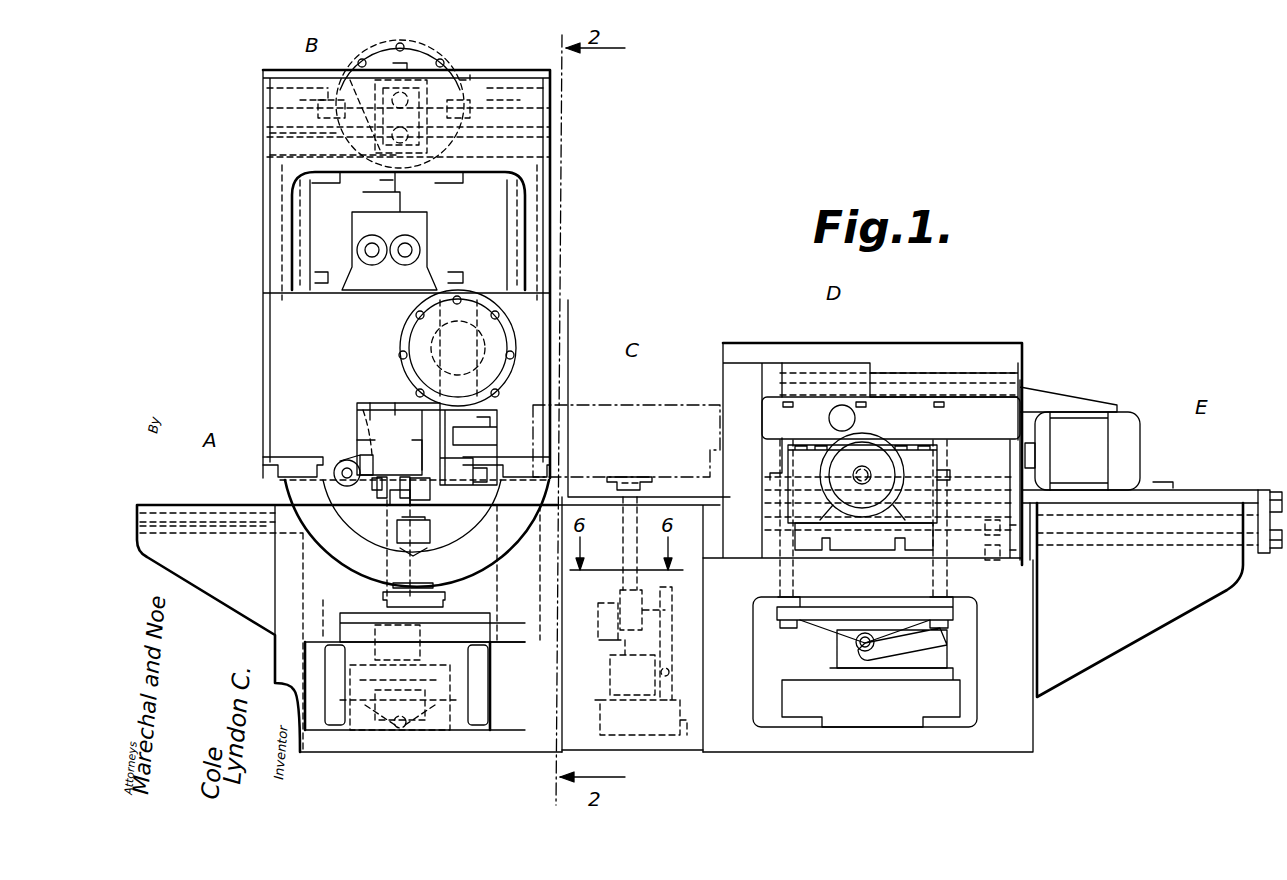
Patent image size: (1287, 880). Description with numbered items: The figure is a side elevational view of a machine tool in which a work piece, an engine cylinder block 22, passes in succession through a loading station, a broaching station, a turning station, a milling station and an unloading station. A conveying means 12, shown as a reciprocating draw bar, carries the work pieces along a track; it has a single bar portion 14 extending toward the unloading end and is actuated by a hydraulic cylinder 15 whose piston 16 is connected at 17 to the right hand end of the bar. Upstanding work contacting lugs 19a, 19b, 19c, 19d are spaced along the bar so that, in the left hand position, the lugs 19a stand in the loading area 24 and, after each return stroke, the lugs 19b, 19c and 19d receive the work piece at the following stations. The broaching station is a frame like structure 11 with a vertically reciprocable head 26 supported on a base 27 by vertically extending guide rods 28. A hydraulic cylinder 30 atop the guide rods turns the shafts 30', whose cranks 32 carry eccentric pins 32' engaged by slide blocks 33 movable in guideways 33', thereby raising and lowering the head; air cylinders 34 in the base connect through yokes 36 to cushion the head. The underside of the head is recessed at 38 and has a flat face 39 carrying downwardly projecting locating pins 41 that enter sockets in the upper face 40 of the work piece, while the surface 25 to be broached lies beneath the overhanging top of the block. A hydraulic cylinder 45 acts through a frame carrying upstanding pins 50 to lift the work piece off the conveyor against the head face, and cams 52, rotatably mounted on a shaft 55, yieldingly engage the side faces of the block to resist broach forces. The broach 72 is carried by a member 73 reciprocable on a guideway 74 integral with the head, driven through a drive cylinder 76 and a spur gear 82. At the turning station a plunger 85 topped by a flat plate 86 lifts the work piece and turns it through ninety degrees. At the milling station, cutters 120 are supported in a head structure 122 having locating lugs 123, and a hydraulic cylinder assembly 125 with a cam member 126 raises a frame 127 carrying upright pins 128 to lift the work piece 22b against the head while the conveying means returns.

The frame like structure 11 is at (285, 576).
The conveying means 12 is at (672, 495).
The single bar portion 14 is at (1212, 487).
The hydraulic cylinder 15 is at (1196, 540).
The piston 16 is at (963, 560).
The connection 17 is at (1262, 488).
The left hand lugs 19a is at (395, 478).
The feeding lugs 19b is at (626, 477).
The lug 19c is at (933, 482).
The work engaging lug 19d is at (1162, 480).
The engine cylinder block 22 is at (373, 440).
The work piece 22b is at (800, 410).
The loading area 24 is at (223, 503).
The surface to be broached 25 is at (430, 495).
The vertically reciprocable head 26 is at (323, 311).
The base 27 is at (437, 746).
The guide rods 28 is at (300, 204).
The hydraulic cylinder 30 is at (408, 93).
The shafts 30' is at (476, 63).
The cranks 32 is at (327, 82).
The eccentric pins 32' is at (476, 127).
The slide blocks 33 is at (281, 132).
The guideways 33' is at (310, 160).
The air cylinders 34 is at (495, 655).
The yokes 36 is at (502, 558).
The recess 38 is at (380, 433).
The flat face 39 is at (398, 439).
The upper face of work piece 40 is at (395, 403).
The locating pins 41 is at (380, 403).
The hydraulic cylinder 45 is at (480, 688).
The upstanding pins 50 is at (387, 510).
The cams 52 is at (362, 460).
The shaft 55 is at (372, 482).
The broach 72 is at (405, 450).
The member 73 is at (445, 428).
The guideway 74 is at (490, 442).
The drive cylinder 76 is at (475, 308).
The spur gear 82 is at (420, 320).
The plunger 85 is at (625, 537).
The flat plate 86 is at (643, 477).
The milling cutters 120 is at (922, 442).
The head structure 122 is at (912, 345).
The locating lugs 123 is at (790, 403).
The hydraulic cylinder assembly 125 is at (885, 717).
The cam member 126 is at (940, 655).
The frame 127 is at (835, 628).
The upright pins 128 is at (933, 577).